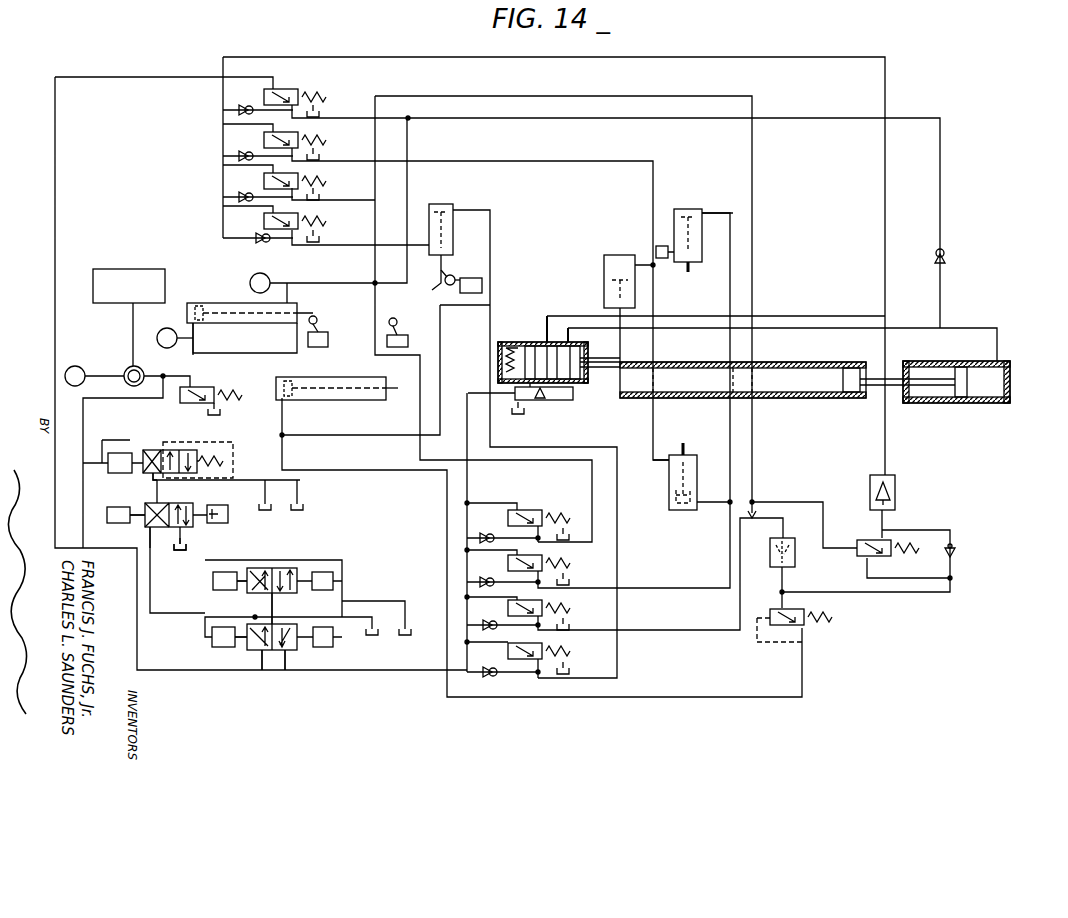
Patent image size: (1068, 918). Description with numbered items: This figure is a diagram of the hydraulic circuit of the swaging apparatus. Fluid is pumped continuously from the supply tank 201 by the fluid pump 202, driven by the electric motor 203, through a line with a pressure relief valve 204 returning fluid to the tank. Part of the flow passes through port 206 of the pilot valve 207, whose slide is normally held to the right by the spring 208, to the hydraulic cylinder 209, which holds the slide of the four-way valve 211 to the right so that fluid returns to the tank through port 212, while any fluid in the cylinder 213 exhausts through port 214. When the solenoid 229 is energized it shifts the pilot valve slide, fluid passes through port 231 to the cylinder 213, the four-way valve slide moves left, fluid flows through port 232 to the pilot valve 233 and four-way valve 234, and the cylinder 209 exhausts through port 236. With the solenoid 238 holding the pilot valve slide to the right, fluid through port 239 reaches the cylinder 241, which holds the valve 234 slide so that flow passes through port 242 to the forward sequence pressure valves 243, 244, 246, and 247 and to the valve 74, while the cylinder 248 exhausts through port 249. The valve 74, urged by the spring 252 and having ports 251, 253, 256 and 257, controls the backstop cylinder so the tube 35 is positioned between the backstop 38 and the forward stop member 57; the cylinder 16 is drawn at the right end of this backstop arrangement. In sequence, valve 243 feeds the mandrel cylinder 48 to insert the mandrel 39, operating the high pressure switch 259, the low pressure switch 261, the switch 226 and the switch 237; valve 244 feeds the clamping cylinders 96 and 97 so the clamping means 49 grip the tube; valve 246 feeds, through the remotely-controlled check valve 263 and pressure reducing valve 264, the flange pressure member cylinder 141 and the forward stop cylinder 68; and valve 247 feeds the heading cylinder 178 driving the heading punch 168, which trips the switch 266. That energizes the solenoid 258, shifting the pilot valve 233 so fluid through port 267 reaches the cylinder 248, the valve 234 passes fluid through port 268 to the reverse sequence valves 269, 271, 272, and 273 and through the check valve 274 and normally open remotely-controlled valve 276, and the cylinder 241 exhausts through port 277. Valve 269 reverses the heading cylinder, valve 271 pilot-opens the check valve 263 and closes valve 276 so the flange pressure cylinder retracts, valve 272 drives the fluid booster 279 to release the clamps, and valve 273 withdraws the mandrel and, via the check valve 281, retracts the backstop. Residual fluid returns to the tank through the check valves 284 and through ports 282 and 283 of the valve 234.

The fourth reverse sequence valve 273 is at (290, 92).
The third reverse sequence valve 272 is at (294, 135).
The second reverse sequence valve 271 is at (294, 177).
The first reverse sequence valve 269 is at (294, 222).
The check valves 284 is at (491, 682).
The supply tank 201 is at (305, 490).
The heading cylinder 178 is at (448, 206).
The switch 266 is at (466, 276).
The heading punch 168 is at (430, 287).
The fluid booster 279 is at (658, 245).
The clamping cylinder 96 is at (690, 208).
The forward stop cylinder 68 is at (619, 270).
The clamping means 49 is at (686, 447).
The clamping cylinder 97 is at (685, 511).
The valve 74 is at (524, 337).
The spring 252 is at (504, 347).
The port 256 is at (570, 392).
The forward stop member 57 is at (622, 360).
The port 257 is at (514, 391).
The port 251 is at (547, 316).
The port 253 is at (568, 328).
The pressure reducing valve 264 is at (810, 626).
The tube 35 is at (743, 368).
The backstop member 38 is at (851, 366).
The cylinder 16 is at (1011, 379).
The check valve 281 is at (964, 246).
The mandrel cylinder 48 is at (222, 303).
The high pressure switch 259 is at (172, 328).
The low pressure switch 261 is at (268, 277).
The mandrel 39 is at (318, 316).
The switch 226 is at (330, 335).
The switch 237 is at (404, 334).
The electric motor 203 is at (68, 372).
The fluid pump 202 is at (128, 369).
The pressure relief valve 204 is at (222, 380).
The flange pressure member cylinder 141 is at (348, 400).
The solenoid 229 is at (118, 452).
The pilot valve 207 is at (150, 450).
The port 206 is at (175, 450).
The port 231 is at (195, 452).
The port 236 is at (240, 450).
The spring 208 is at (262, 454).
The port 214 is at (146, 478).
The hydraulic cylinder 213 is at (106, 514).
The four-way valve 211 is at (110, 524).
The hydraulic cylinder 209 is at (236, 524).
The port 212 is at (142, 524).
The port 232 is at (190, 546).
The pilot valve 233 is at (296, 567).
The port 249 is at (286, 562).
The port 267 is at (300, 574).
The port 277 is at (363, 563).
The solenoid 238 is at (334, 580).
The solenoid 258 is at (212, 582).
The port 239 is at (244, 590).
The four-way valve 234 is at (292, 650).
The port 282 is at (284, 662).
The hydraulic cylinder 248 is at (211, 637).
The hydraulic cylinder 241 is at (334, 642).
The port 268 is at (250, 650).
The port 283 is at (262, 660).
The port 242 is at (272, 662).
The first forward sequence pressure valve 243 is at (540, 512).
The second forward sequence pressure valve 244 is at (508, 562).
The third forward sequence pressure valve 246 is at (508, 607).
The fourth forward sequence pressure valve 247 is at (508, 651).
The check valve 274 is at (897, 484).
The remotely-controlled check valve 263 is at (797, 556).
The remotely-controlled valve 276 is at (880, 560).